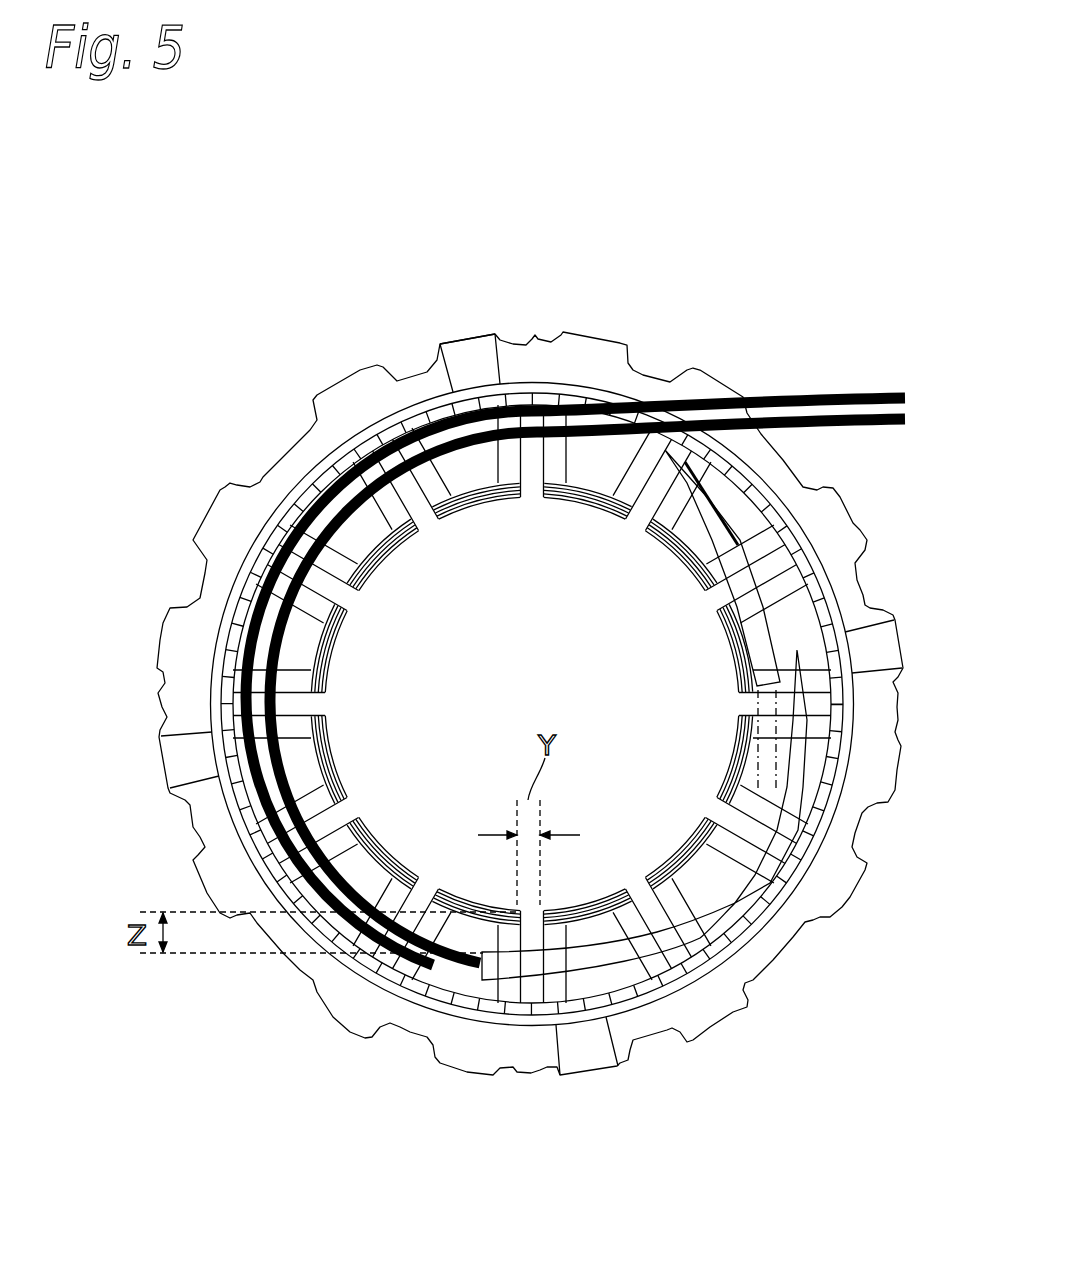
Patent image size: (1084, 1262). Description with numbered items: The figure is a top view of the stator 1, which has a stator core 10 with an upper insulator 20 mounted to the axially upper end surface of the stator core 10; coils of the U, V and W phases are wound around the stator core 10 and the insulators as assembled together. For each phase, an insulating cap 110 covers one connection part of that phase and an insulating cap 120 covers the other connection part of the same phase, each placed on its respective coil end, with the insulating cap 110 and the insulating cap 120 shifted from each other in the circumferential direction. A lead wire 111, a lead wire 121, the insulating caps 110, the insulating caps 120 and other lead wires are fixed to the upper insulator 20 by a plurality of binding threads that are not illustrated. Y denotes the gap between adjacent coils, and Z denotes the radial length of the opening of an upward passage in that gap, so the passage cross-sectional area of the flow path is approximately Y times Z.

The stator 1 is at (803, 357).
The stator core 10 is at (335, 382).
The upper insulator 20 is at (468, 365).
The insulating cap 110 is at (743, 583).
The lead wire 111 is at (383, 843).
The insulating cap 120 is at (770, 585).
The lead wire 121 is at (247, 790).